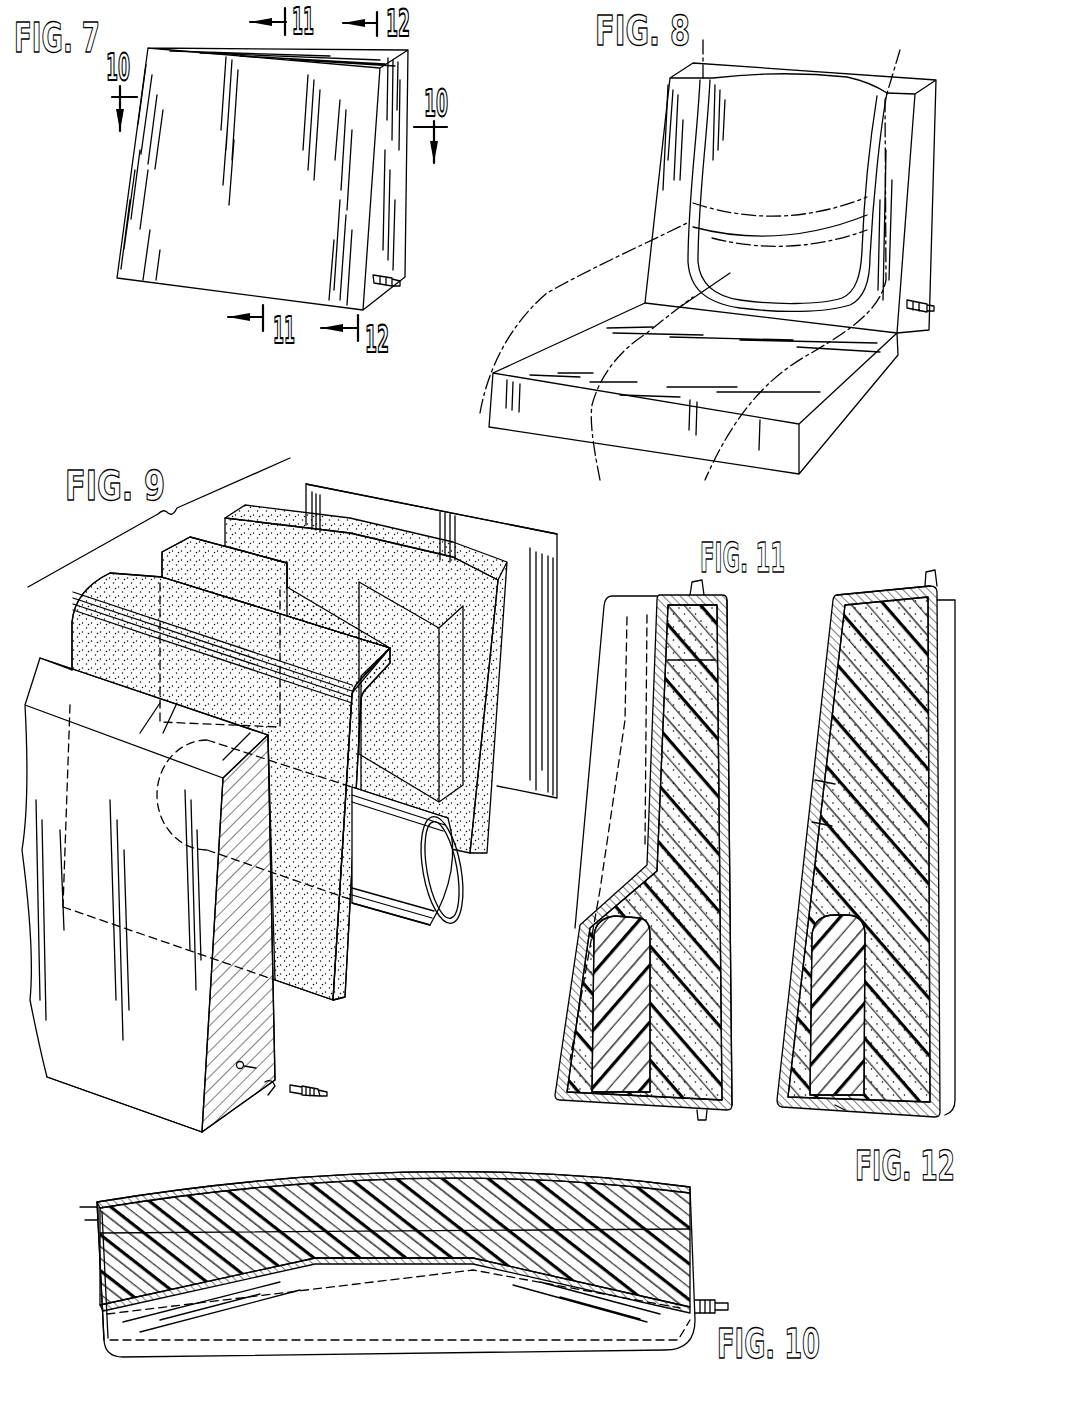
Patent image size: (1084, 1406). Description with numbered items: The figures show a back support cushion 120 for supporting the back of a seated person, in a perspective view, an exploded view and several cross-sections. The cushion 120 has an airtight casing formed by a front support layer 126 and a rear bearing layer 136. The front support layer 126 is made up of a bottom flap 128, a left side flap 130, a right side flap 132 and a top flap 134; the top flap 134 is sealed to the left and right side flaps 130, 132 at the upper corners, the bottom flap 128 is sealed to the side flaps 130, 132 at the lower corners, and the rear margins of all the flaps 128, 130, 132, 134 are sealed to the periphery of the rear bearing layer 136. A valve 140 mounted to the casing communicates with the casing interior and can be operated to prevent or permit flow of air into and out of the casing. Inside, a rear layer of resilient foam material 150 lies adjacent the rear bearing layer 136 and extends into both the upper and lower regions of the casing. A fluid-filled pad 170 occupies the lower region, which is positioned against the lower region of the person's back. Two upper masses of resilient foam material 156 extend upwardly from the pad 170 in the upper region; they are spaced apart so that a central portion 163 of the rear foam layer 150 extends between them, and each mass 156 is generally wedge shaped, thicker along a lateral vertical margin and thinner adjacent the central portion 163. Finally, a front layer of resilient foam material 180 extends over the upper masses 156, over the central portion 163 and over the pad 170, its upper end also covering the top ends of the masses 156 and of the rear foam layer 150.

In FIG. 7, the cushion 120 is at (417, 193).
In FIG. 8, the cushion 120 is at (660, 137).
In FIG. 7, the front support layer 126 is at (165, 272).
In FIG. 9, the front support layer 126 is at (140, 1100).
In FIG. 11, the front support layer 126 is at (628, 600).
In FIG. 12, the front support layer 126 is at (810, 870).
In FIG. 10, the front support layer 126 is at (530, 1333).
In FIG. 9, the bottom flap 128 is at (265, 1095).
In FIG. 11, the bottom flap 128 is at (672, 1117).
In FIG. 12, the bottom flap 128 is at (837, 1110).
In FIG. 7, the left side flap 130 is at (160, 40).
In FIG. 10, the left side flap 130 is at (95, 1247).
In FIG. 7, the right side flap 132 is at (397, 238).
In FIG. 9, the right side flap 132 is at (267, 1036).
In FIG. 7, the top flap 134 is at (197, 30).
In FIG. 9, the top flap 134 is at (52, 668).
In FIG. 11, the top flap 134 is at (695, 580).
In FIG. 12, the top flap 134 is at (885, 580).
In FIG. 7, the rear bearing layer 136 is at (410, 62).
In FIG. 9, the rear bearing layer 136 is at (391, 512).
In FIG. 11, the rear bearing layer 136 is at (729, 627).
In FIG. 12, the rear bearing layer 136 is at (950, 590).
In FIG. 10, the rear bearing layer 136 is at (495, 1175).
In FIG. 7, the valve 140 is at (394, 283).
In FIG. 8, the valve 140 is at (934, 308).
In FIG. 9, the valve 140 is at (318, 1078).
In FIG. 10, the valve 140 is at (713, 1297).
In FIG. 9, the rear layer of resilient foam material 150 is at (324, 527).
In FIG. 11, the rear layer of resilient foam material 150 is at (707, 690).
In FIG. 12, the rear layer of resilient foam material 150 is at (862, 1110).
In FIG. 10, the rear layer of resilient foam material 150 is at (610, 1183).
In FIG. 9, the upper mass of resilient foam material 156 is at (160, 572).
In FIG. 12, the upper mass of resilient foam material 156 is at (830, 782).
In FIG. 10, the upper mass of resilient foam material 156 is at (695, 1237).
In FIG. 9, the central portion 163 is at (287, 588).
In FIG. 9, the fluid-filled pad 170 is at (411, 916).
In FIG. 11, the fluid-filled pad 170 is at (563, 1008).
In FIG. 12, the fluid-filled pad 170 is at (822, 990).
In FIG. 9, the front layer of resilient foam material 180 is at (75, 630).
In FIG. 11, the front layer of resilient foam material 180 is at (667, 667).
In FIG. 12, the front layer of resilient foam material 180 is at (822, 825).
In FIG. 10, the front layer of resilient foam material 180 is at (523, 1267).